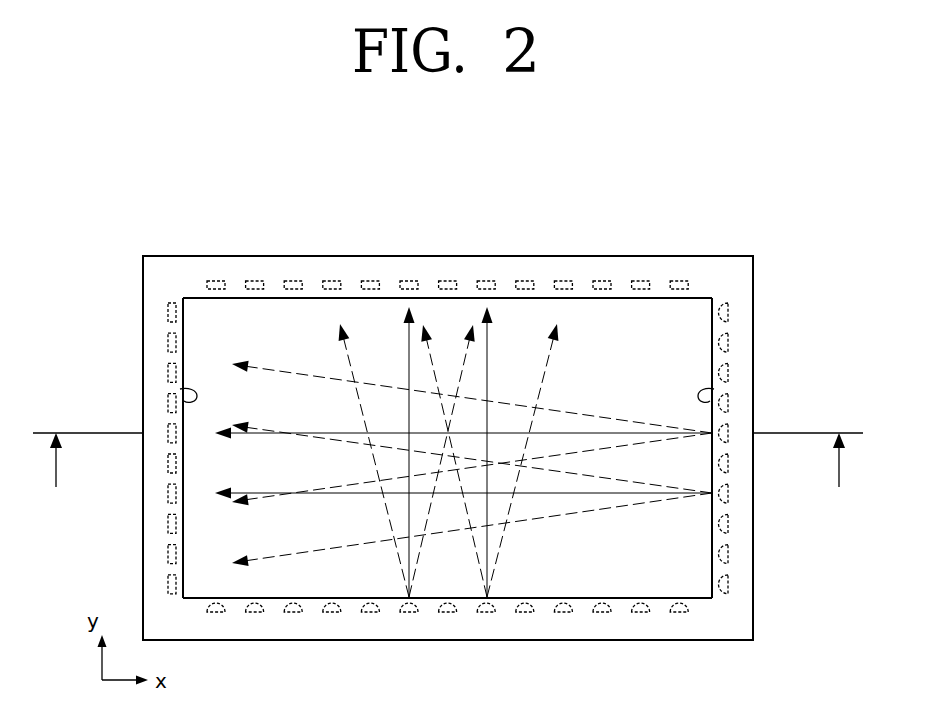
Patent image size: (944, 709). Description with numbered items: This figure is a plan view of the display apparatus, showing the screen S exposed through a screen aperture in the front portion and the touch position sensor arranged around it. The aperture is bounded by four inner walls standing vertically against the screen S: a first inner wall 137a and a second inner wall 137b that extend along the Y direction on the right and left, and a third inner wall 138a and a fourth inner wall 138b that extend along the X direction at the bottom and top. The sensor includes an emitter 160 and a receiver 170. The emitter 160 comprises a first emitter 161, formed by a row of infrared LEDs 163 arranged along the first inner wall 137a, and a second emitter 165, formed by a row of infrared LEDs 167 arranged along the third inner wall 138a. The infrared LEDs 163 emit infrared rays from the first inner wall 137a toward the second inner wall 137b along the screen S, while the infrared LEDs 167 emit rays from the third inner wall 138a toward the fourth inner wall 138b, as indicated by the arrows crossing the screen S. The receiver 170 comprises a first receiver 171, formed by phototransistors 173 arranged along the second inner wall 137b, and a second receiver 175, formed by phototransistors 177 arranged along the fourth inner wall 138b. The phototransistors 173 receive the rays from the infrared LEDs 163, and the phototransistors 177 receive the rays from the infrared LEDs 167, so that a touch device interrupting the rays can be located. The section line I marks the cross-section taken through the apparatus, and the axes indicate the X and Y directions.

The receiver 170 is at (353, 402).
The second receiver 175 is at (384, 249).
The first receiver 171 is at (128, 431).
The phototransistor 177 is at (333, 281).
The phototransistor 173 is at (168, 492).
The emitter 160 is at (538, 495).
The first emitter 161 is at (766, 465).
The second emitter 165 is at (509, 645).
The infrared LED 163 is at (728, 492).
The infrared LED 167 is at (488, 612).
The first inner wall 137a is at (714, 389).
The second inner wall 137b is at (180, 389).
The third inner wall 138a is at (537, 598).
The fourth inner wall 138b is at (540, 298).
The screen S is at (638, 320).
The section line I- I is at (448, 475).